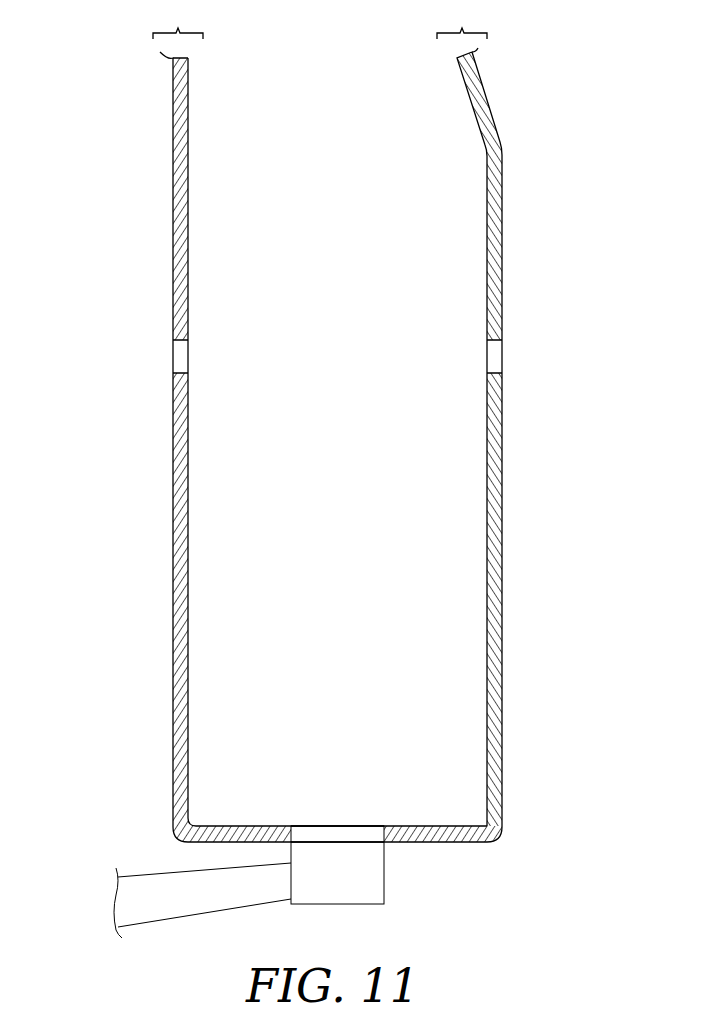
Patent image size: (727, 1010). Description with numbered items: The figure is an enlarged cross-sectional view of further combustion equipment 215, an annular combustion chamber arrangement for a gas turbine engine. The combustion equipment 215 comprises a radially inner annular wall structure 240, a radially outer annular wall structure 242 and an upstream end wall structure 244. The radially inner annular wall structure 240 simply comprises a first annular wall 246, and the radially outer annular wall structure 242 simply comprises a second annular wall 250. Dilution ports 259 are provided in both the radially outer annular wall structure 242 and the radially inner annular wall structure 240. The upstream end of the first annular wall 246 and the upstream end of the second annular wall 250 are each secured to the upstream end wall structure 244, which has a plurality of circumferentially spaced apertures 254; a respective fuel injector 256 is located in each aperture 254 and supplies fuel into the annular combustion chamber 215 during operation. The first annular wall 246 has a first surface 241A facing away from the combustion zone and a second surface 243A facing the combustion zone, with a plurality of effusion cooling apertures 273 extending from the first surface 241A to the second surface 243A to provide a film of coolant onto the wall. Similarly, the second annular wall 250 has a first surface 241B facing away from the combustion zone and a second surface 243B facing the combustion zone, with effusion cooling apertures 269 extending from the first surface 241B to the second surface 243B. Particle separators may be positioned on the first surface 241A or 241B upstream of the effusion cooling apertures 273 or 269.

The combustion equipment 215 is at (103, 275).
The radially inner annular wall structure 240 is at (462, 21).
The radially outer annular wall structure 242 is at (178, 22).
The first surface 241A is at (503, 520).
The first surface 241B is at (175, 462).
The second surface 243A is at (487, 510).
The second surface 243B is at (188, 450).
The upstream end wall structure 244 is at (435, 845).
The first annular wall 246 is at (503, 432).
The second annular wall 250 is at (175, 502).
The aperture 254 is at (293, 832).
The fuel injector 256 is at (333, 888).
The dilution port 259 is at (177, 358).
The effusion cooling aperture 269 is at (175, 225).
The effusion cooling aperture 273 is at (488, 123).